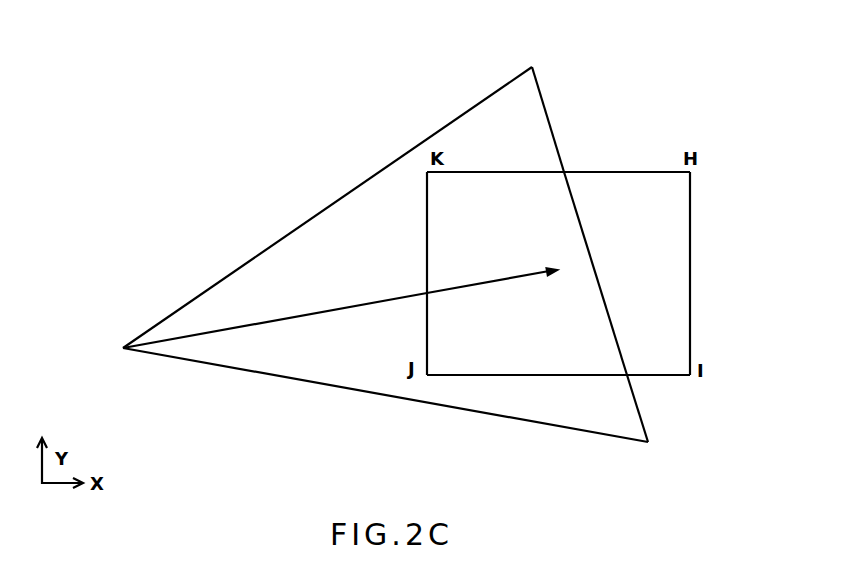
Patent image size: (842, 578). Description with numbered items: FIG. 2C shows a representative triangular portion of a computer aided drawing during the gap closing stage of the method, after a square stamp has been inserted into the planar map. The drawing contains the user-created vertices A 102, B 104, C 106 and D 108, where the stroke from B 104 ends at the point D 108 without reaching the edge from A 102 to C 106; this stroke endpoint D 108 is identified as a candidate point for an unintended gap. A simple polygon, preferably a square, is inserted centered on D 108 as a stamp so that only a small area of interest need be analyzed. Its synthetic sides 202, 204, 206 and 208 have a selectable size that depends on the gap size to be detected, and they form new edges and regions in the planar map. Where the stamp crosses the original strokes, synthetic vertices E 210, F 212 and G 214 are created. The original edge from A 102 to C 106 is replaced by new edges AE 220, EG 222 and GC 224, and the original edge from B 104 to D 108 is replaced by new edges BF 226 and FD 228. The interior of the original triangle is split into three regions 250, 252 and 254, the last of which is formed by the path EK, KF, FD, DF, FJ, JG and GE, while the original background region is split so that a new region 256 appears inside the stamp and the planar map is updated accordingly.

The vertex A 102 is at (535, 69).
The vertex B 104 is at (123, 348).
The vertex C 106 is at (646, 444).
The vertex D 108 is at (552, 275).
The side of square stamp 202 is at (608, 172).
The side of square stamp 204 is at (690, 268).
The side of square stamp 206 is at (533, 375).
The side of square stamp 208 is at (427, 222).
The vertex E 210 is at (563, 172).
The vertex F 212 is at (430, 295).
The vertex G 214 is at (625, 373).
The edge AE 220 is at (547, 118).
The edge EG 222 is at (595, 270).
The edge GC 224 is at (640, 410).
The edge BF 226 is at (310, 317).
The edge FD 228 is at (495, 282).
The region 250 is at (320, 233).
The region 252 is at (342, 377).
The region 254 is at (493, 197).
The region 256 is at (660, 208).